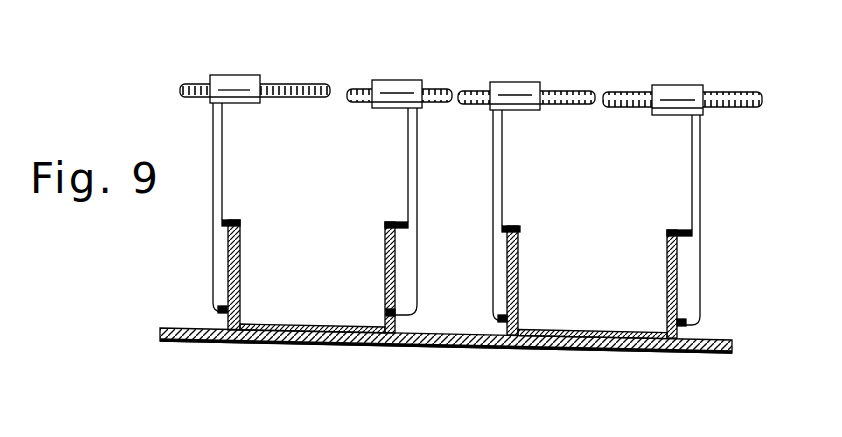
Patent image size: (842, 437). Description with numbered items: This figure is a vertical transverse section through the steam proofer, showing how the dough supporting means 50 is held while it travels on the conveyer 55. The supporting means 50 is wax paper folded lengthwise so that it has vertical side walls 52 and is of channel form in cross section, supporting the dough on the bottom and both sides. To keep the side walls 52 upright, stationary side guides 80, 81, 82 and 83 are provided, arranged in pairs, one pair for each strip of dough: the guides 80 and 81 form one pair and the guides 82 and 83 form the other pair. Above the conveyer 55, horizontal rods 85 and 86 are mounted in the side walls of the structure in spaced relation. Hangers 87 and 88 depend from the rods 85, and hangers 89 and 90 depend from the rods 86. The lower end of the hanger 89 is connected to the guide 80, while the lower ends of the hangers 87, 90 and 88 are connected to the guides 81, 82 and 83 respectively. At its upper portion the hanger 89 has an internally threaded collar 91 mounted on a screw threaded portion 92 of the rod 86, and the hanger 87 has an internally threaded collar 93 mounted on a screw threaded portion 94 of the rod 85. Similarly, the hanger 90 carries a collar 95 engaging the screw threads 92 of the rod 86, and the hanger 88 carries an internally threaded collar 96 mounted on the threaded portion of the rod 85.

The supporting means 50 is at (325, 325).
The vertical side walls 52 is at (240, 262).
The conveyer 55 is at (465, 347).
The stationary side guide 80 is at (238, 222).
The stationary side guide 81 is at (393, 223).
The stationary side guide 82 is at (518, 228).
The stationary side guide 83 is at (674, 231).
The horizontal rod 85 is at (353, 102).
The horizontal rod 86 is at (198, 82).
The hanger 87 is at (417, 184).
The hanger 88 is at (700, 174).
The hanger 89 is at (222, 172).
The hanger 90 is at (502, 172).
The internally threaded collar 91 is at (244, 84).
The screw threaded portion 92 is at (326, 83).
The internally threaded collar 93 is at (385, 108).
The screw threaded portion 94 is at (362, 88).
The collar 95 is at (518, 90).
The internally threaded collar 96 is at (672, 93).